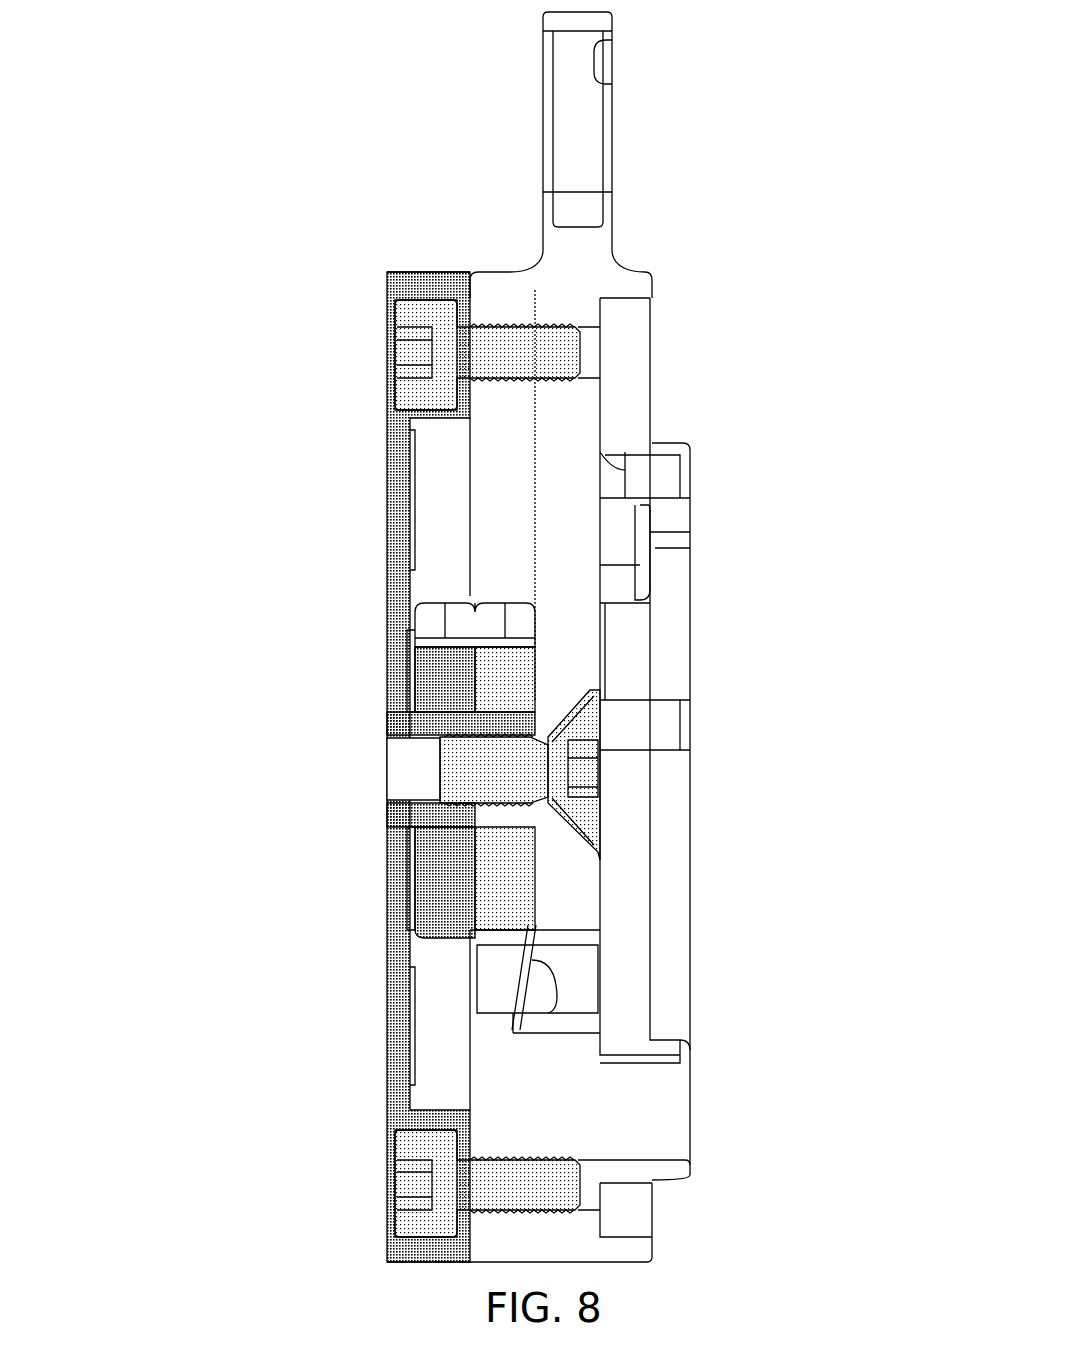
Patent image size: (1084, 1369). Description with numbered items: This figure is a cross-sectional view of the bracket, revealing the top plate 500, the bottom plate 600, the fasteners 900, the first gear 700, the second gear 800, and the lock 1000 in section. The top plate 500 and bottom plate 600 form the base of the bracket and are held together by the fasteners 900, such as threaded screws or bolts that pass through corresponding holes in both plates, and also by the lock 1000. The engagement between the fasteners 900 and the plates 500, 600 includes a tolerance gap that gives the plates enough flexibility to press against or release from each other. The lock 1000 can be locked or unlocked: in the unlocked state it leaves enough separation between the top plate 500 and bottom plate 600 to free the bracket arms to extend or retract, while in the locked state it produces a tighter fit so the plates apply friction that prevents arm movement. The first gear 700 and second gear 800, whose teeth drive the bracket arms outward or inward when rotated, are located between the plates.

The top plate 500 is at (390, 1052).
The bottom plate 600 is at (637, 420).
The first gear 700 is at (498, 965).
The second gear 800 is at (430, 905).
The fasteners 900 is at (410, 1193).
The lock 1000 is at (585, 860).